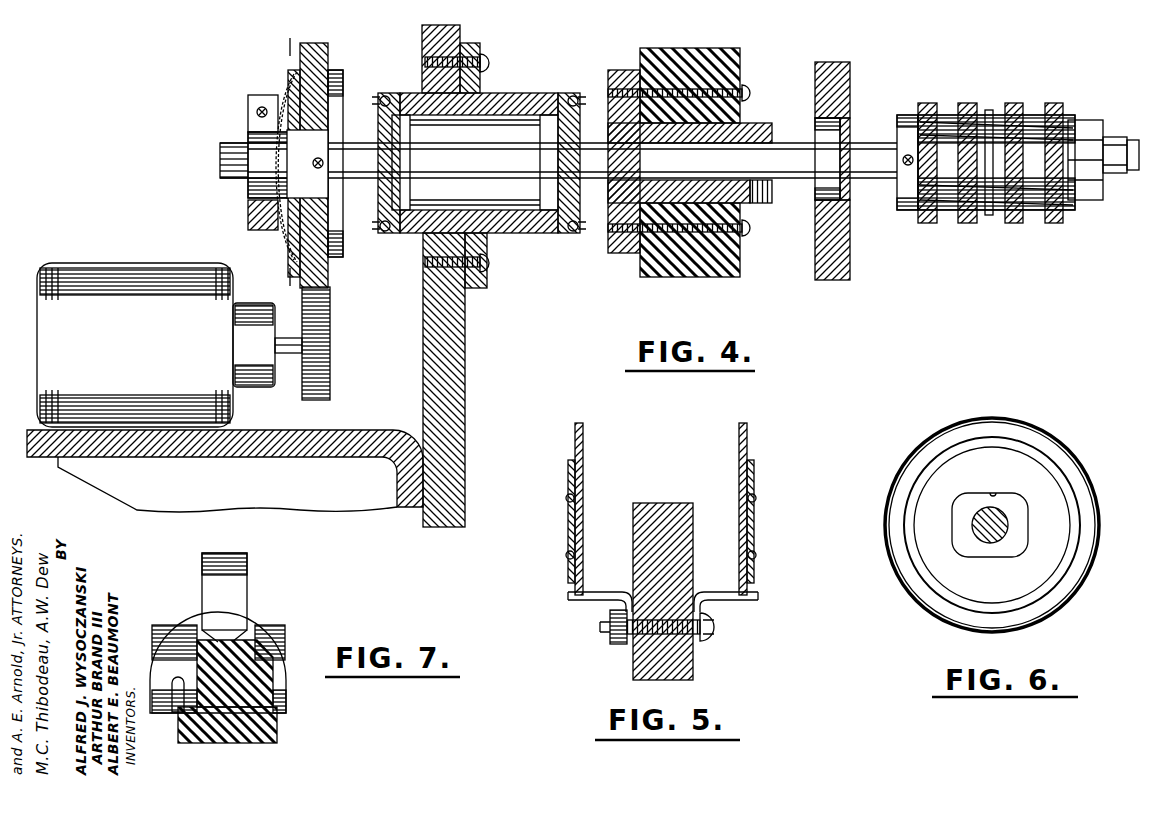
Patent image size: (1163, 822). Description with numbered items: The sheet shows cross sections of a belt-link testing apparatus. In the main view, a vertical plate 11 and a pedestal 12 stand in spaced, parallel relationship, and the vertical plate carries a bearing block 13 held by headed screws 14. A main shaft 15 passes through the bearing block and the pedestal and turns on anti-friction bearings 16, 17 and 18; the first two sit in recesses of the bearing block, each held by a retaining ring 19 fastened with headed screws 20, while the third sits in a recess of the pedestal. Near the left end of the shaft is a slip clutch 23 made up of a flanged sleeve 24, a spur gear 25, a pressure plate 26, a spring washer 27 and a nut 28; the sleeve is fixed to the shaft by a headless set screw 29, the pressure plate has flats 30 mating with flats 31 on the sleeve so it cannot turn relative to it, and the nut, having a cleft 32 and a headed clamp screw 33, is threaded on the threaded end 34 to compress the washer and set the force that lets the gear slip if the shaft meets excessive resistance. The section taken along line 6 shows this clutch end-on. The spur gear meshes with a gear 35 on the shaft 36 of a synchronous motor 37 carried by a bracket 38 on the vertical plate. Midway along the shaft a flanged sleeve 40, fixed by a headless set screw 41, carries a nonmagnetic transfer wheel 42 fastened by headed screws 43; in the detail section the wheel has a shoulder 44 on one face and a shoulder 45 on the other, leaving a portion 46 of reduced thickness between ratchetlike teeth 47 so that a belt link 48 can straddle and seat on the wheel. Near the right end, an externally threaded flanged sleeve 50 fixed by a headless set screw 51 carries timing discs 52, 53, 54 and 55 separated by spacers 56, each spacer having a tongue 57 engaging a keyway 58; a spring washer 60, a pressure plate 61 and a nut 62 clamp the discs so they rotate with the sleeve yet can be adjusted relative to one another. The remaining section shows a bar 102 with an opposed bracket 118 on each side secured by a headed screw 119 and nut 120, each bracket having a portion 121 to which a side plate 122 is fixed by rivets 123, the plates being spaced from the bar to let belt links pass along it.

In FIG. 4, the section line 6- 6 is at (300, 32).
In FIG. 4, the vertical plate 11 is at (458, 372).
In FIG. 4, the pedestal 12 is at (820, 78).
In FIG. 4, the bearing block 13 is at (537, 233).
In FIG. 4, the headed screws 14 is at (486, 63).
In FIG. 4, the main shaft 15 is at (243, 178).
In FIG. 6, the main shaft 15 is at (1007, 528).
In FIG. 4, the anti-friction bearing 16 is at (401, 132).
In FIG. 4, the anti-friction bearing 17 is at (548, 132).
In FIG. 4, the anti-friction bearing 18 is at (820, 135).
In FIG. 4, the retaining ring 19 is at (381, 108).
In FIG. 4, the headed screws 20 is at (383, 225).
In FIG. 4, the slip clutch 23 is at (281, 90).
In FIG. 4, the flanged sleeve 24 is at (338, 75).
In FIG. 6, the flanged sleeve 24 is at (978, 552).
In FIG. 4, the spur gear 25 is at (318, 48).
In FIG. 6, the spur gear 25 is at (940, 438).
In FIG. 4, the pressure plate 26 is at (292, 252).
In FIG. 6, the pressure plate 26 is at (1023, 456).
In FIG. 4, the spring washer 27 is at (286, 228).
In FIG. 4, the nut 28 is at (250, 220).
In FIG. 4, the headless set screw 29 is at (322, 166).
In FIG. 6, the flats 30 is at (995, 496).
In FIG. 6, the flats 31 is at (1008, 557).
In FIG. 4, the cleft 32 is at (248, 124).
In FIG. 4, the headed clamp screw 33 is at (260, 112).
In FIG. 4, the threaded end 34 is at (248, 157).
In FIG. 4, the gear 35 is at (317, 402).
In FIG. 4, the shaft 36 is at (287, 353).
In FIG. 4, the synchronous motor 37 is at (185, 270).
In FIG. 4, the bracket 38 is at (268, 432).
In FIG. 4, the flanged sleeve 40 is at (622, 77).
In FIG. 4, the headless set screw 41 is at (752, 205).
In FIG. 4, the transfer wheel 42 is at (687, 48).
In FIG. 7, the transfer wheel 42 is at (280, 728).
In FIG. 4, the headed screws 43 is at (742, 92).
In FIG. 7, the shoulder 44 is at (270, 703).
In FIG. 7, the shoulder 45 is at (180, 685).
In FIG. 7, the portion of reduced thickness 46 is at (237, 667).
In FIG. 7, the ratchetlike teeth 47 is at (207, 640).
In FIG. 7, the belt link 48 is at (240, 575).
In FIG. 4, the externally threaded flanged sleeve 50 is at (903, 128).
In FIG. 4, the headless set screw 51 is at (905, 165).
In FIG. 4, the timing disc 52 is at (927, 103).
In FIG. 4, the timing disc 53 is at (968, 103).
In FIG. 4, the timing disc 54 is at (1015, 103).
In FIG. 4, the timing disc 55 is at (1057, 103).
In FIG. 4, the spacers 56 is at (1023, 220).
In FIG. 4, the tongue 57 is at (992, 123).
In FIG. 4, the keyway 58 is at (1033, 130).
In FIG. 4, the spring washer 60 is at (1067, 120).
In FIG. 4, the pressure plate 61 is at (1080, 207).
In FIG. 4, the nut 62 is at (1100, 127).
In FIG. 5, the bar 102 is at (638, 668).
In FIG. 5, the bracket 118 is at (572, 593).
In FIG. 5, the headed screw 119 is at (707, 643).
In FIG. 5, the nut 120 is at (617, 645).
In FIG. 5, the portion 121 is at (570, 525).
In FIG. 5, the side plate 122 is at (575, 442).
In FIG. 5, the rivets 123 is at (568, 498).